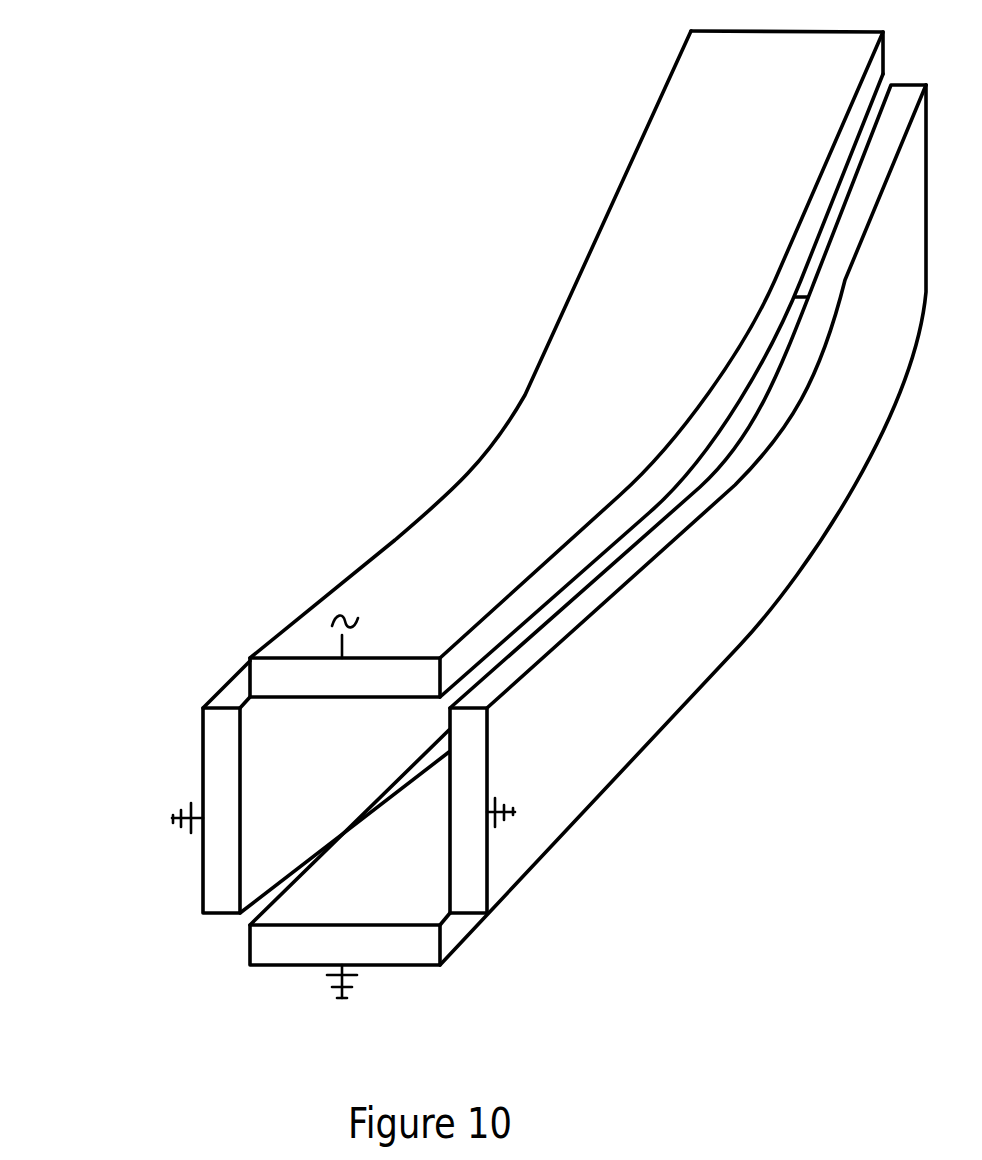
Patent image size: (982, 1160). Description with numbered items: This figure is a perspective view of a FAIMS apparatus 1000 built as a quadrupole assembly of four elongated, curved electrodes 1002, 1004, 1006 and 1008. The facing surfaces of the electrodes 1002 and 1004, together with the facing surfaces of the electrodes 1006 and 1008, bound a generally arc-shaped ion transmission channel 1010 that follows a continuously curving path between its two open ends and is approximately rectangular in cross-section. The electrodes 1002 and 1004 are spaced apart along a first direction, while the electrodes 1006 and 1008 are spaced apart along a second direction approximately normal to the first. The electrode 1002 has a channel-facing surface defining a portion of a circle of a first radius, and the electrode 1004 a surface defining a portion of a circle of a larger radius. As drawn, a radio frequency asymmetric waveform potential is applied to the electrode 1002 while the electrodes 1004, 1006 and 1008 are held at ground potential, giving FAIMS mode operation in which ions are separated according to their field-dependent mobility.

The FAIMS apparatus 1000 is at (484, 533).
The electrode 1002 is at (605, 368).
The electrode 1004 is at (418, 948).
The electrode 1006 is at (622, 740).
The electrode 1008 is at (215, 750).
The ion transmission channel 1010 is at (373, 863).